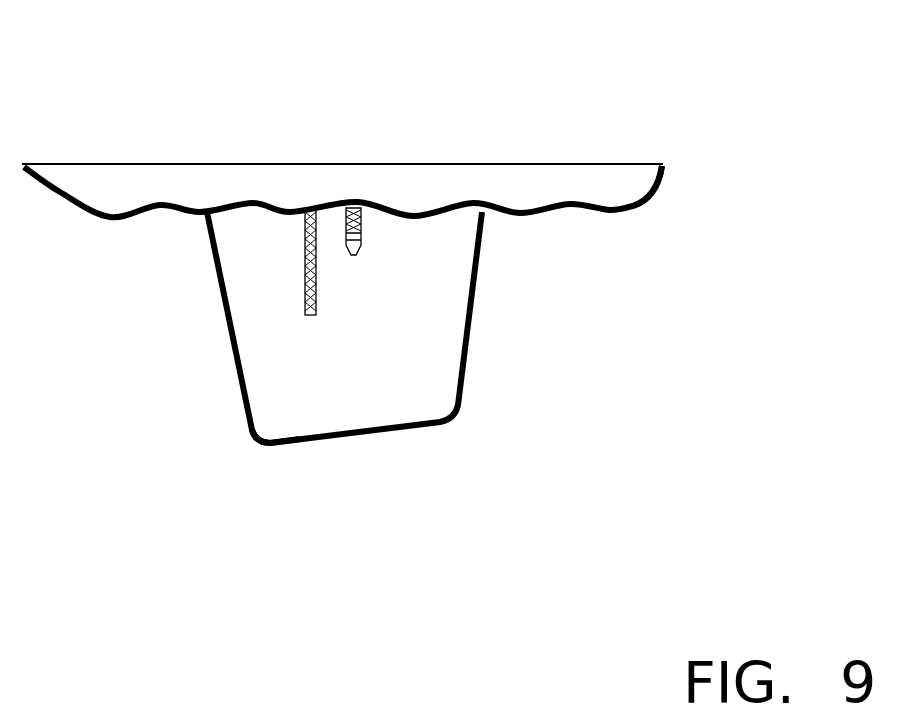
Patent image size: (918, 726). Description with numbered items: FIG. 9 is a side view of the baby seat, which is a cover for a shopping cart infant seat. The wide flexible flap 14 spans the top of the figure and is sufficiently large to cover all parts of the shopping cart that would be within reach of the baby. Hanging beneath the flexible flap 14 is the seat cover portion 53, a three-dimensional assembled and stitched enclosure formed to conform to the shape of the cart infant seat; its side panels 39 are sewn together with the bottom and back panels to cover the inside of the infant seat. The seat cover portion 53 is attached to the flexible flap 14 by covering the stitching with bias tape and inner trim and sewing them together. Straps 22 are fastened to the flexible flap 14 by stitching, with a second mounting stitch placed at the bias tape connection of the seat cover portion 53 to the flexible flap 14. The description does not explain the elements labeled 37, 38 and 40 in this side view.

The flexible flap 14 is at (148, 183).
The straps 22 is at (323, 210).
The coating layer 37 is at (493, 163).
The edge portion 38 is at (632, 207).
The side panels 39 is at (415, 350).
The bottom 40 is at (257, 437).
The seat cover portion 53 is at (233, 395).